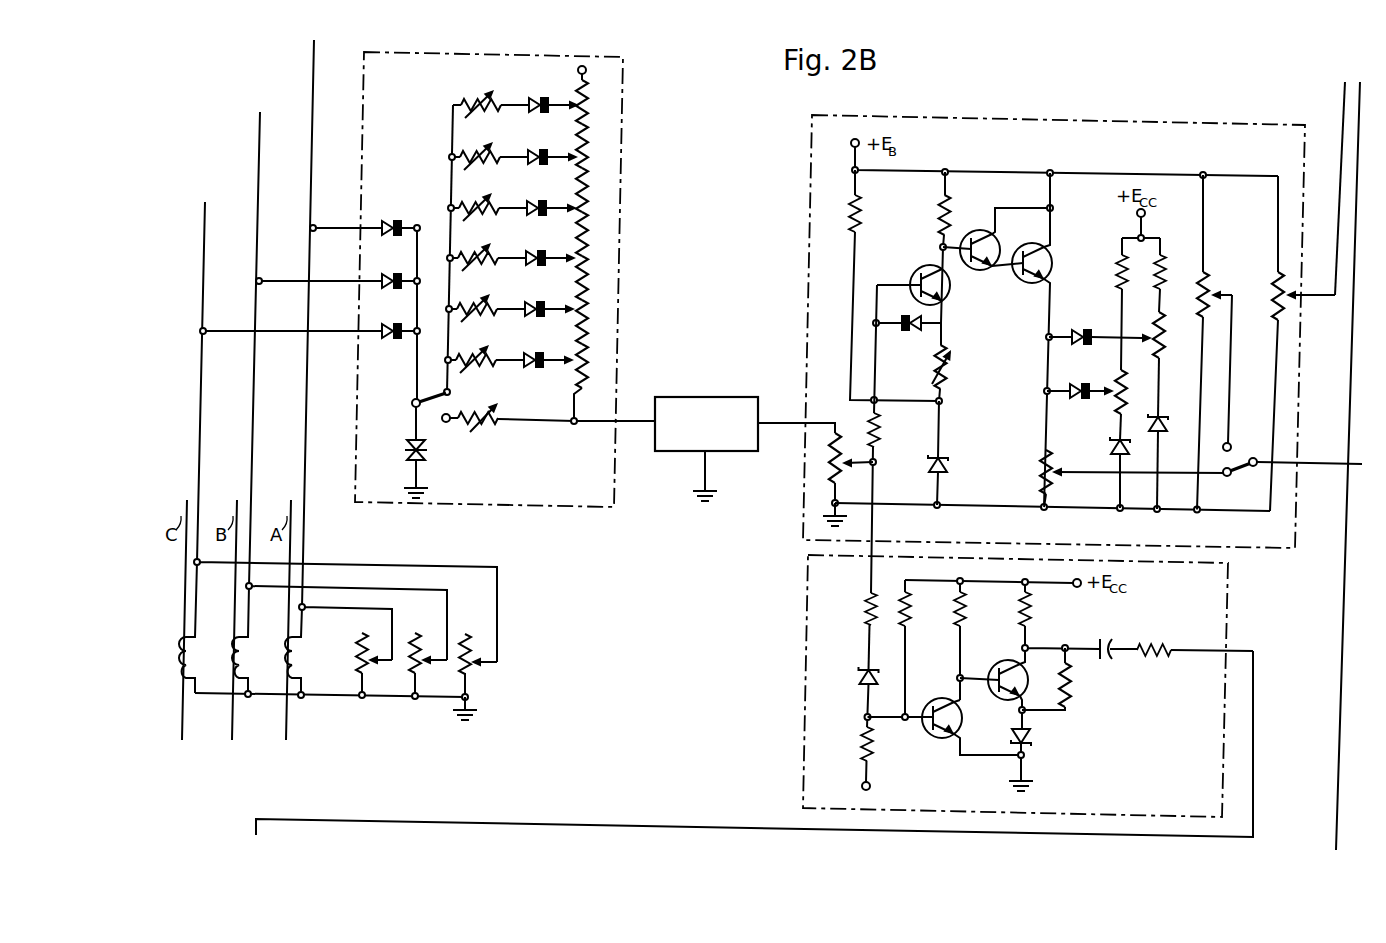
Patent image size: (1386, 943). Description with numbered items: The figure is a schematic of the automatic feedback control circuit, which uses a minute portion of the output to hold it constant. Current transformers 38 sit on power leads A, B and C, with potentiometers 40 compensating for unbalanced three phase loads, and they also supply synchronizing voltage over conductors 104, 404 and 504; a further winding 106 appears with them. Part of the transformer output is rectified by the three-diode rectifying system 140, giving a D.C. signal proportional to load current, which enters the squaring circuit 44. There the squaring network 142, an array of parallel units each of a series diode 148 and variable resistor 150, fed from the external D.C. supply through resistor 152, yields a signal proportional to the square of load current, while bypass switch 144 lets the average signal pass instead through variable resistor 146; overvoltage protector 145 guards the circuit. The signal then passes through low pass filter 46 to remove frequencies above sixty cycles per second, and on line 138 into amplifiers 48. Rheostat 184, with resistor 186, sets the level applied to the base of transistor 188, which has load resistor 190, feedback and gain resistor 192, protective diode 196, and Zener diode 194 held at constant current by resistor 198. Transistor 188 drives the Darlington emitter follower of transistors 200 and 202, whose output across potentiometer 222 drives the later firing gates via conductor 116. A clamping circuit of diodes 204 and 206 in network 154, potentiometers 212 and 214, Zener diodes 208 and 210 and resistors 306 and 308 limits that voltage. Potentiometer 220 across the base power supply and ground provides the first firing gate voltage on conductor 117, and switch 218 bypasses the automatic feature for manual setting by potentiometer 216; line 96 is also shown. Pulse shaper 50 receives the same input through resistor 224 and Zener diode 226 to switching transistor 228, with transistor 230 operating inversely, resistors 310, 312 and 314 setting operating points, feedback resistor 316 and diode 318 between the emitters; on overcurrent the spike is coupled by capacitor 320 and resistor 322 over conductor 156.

The conductor 104 is at (314, 133).
The conductor 404 is at (255, 212).
The conductor 504 is at (202, 262).
The current transformers 38 is at (270, 664).
The current transformer 106 is at (295, 652).
The potentiometers 40 is at (432, 624).
The squaring circuit 44 is at (624, 100).
The three phase rectifying system 140 is at (406, 212).
The squaring network 142 is at (503, 235).
The variable resistor 150 is at (470, 104).
The diode 148 is at (538, 110).
The resistor 152 is at (581, 244).
The bypass switch 144 is at (412, 400).
The overvoltage protector 145 is at (422, 454).
The variable resistor 146 is at (483, 424).
The low pass filter 46 is at (662, 452).
The amplifiers 48 is at (964, 116).
The output line 138 is at (874, 531).
The resistor 198 is at (858, 216).
The load resistor 190 is at (930, 206).
The transistor 188 is at (918, 278).
The transistor 200 is at (980, 230).
The transistor 202 is at (1026, 340).
The diode 196 is at (907, 336).
The variable resistor 192 is at (948, 368).
The resistor 186 is at (882, 430).
The rheostat 184 is at (850, 420).
The Zener diode 194 is at (947, 455).
The potentiometer 222 is at (1043, 473).
The diode network 154 is at (1100, 331).
The diode 204 is at (1081, 334).
The diode 206 is at (1047, 389).
The resistor 306 is at (1118, 266).
The potentiometer 212 is at (1112, 405).
The Zener diode 208 is at (1108, 444).
The resistor 308 is at (1166, 256).
The potentiometer 214 is at (1176, 364).
The Zener diode 210 is at (1159, 412).
The potentiometer 216 is at (1219, 342).
The potentiometer 220 is at (1276, 294).
The conductor 117 is at (1327, 295).
The switch 218 is at (1230, 461).
The conductor 116 is at (1314, 462).
The line 96 is at (1341, 550).
The pulse shaper 50 is at (808, 596).
The resistor 224 is at (862, 613).
The Zener diode 226 is at (860, 678).
The resistor 310 is at (912, 650).
The resistor 312 is at (966, 617).
The switching transistor 228 is at (933, 700).
The switching transistor 230 is at (1003, 667).
The resistor 314 is at (1036, 617).
The feedback resistor 316 is at (1072, 688).
The diode 318 is at (1031, 740).
The capacitor 320 is at (1109, 630).
The resistor 322 is at (1156, 648).
The conductor 156 is at (1254, 698).